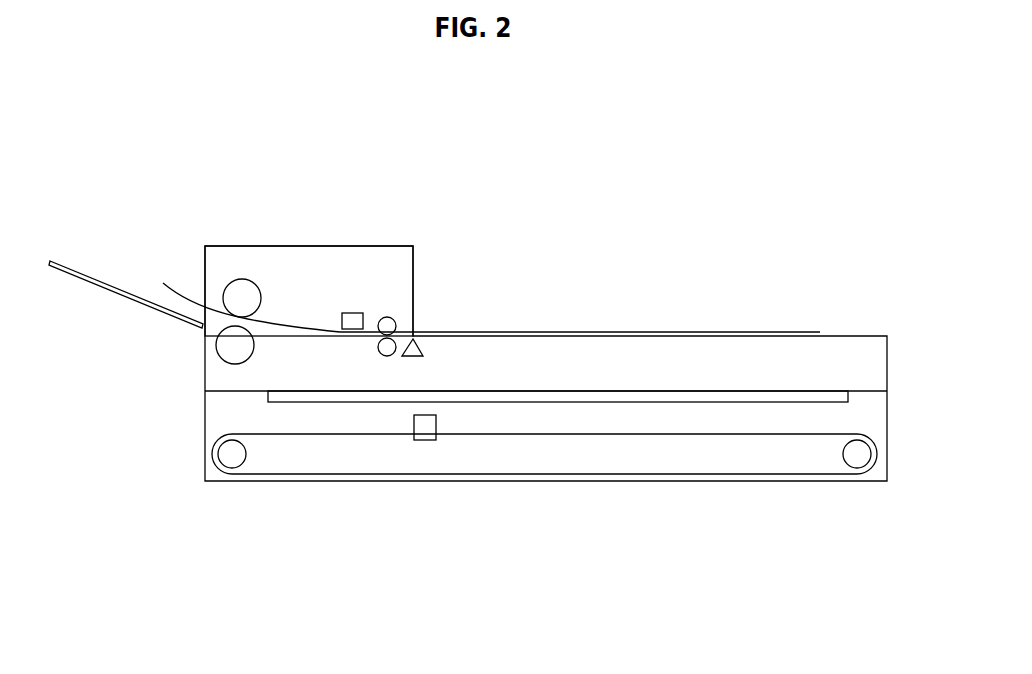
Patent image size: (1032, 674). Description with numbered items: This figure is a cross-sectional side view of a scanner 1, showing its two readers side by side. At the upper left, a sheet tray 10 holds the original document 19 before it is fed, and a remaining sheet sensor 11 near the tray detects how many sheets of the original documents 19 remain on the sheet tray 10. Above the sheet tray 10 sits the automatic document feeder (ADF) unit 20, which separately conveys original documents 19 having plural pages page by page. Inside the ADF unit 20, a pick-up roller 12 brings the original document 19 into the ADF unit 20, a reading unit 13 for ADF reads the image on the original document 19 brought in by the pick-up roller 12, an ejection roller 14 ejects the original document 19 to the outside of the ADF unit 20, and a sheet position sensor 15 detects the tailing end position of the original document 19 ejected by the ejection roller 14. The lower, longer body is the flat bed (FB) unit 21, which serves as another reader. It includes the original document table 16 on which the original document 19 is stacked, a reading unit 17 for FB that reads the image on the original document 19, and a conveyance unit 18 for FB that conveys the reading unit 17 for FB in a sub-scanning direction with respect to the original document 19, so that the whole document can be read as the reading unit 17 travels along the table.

The scanner 1 is at (640, 157).
The sheet tray 10 is at (118, 284).
The remaining sheet sensor 11 is at (187, 311).
The pick-up roller 12 is at (242, 279).
The reading unit for ADF 13 is at (362, 313).
The ejection roller 14 is at (395, 323).
The sheet position sensor 15 is at (423, 348).
The original document table 16 is at (817, 400).
The reading unit for FB 17 is at (421, 440).
The conveyance unit for FB 18 is at (363, 475).
The original document 19 is at (790, 332).
The automatic document feeder (ADF) unit 20 is at (303, 246).
The flat bed (FB) unit 21 is at (204, 423).